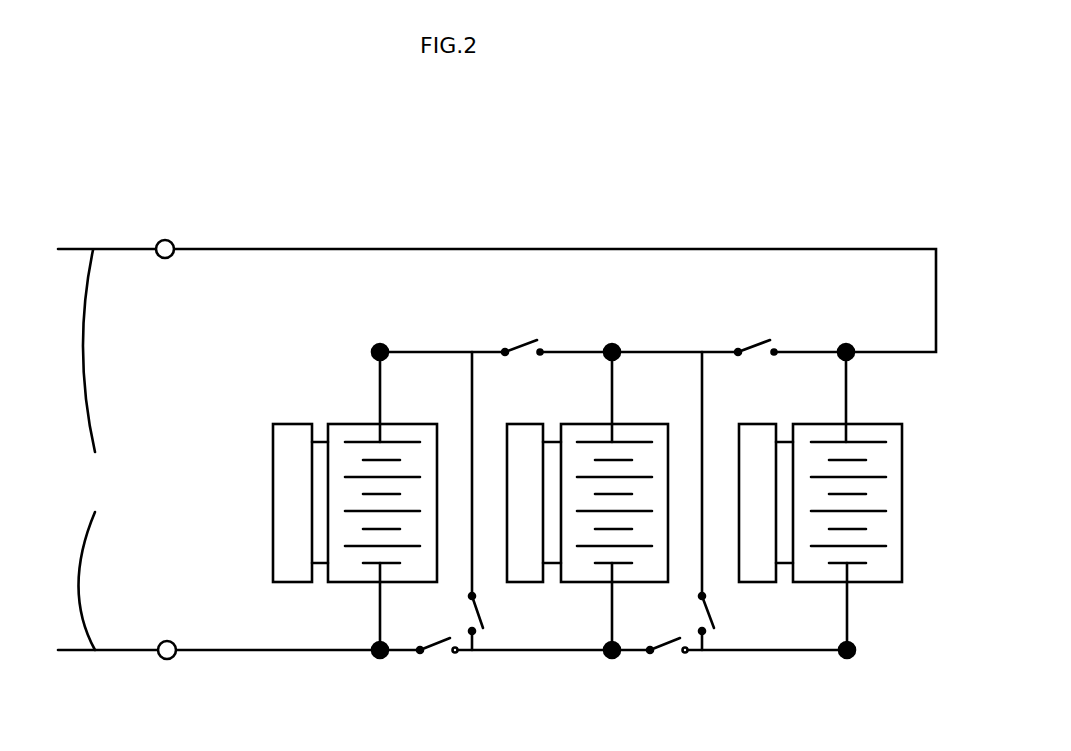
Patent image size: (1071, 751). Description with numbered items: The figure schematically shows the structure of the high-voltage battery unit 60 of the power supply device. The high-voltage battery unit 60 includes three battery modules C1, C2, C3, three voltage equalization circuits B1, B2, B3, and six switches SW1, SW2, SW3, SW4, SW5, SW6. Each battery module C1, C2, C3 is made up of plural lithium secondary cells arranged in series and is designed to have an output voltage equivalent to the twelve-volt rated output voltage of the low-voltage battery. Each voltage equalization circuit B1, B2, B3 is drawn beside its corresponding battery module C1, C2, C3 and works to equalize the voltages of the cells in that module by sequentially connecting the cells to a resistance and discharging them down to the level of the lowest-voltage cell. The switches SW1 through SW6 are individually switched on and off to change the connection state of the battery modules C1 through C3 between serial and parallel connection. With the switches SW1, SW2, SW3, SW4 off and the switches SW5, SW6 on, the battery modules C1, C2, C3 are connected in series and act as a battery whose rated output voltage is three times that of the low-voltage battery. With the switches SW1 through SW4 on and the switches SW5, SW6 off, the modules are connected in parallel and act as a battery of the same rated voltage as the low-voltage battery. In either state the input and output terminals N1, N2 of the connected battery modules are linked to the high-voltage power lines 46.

The high-voltage battery unit 60 is at (678, 176).
The high-voltage power lines 46 is at (98, 450).
The input and output terminal N1 is at (167, 660).
The input and output terminal N2 is at (164, 240).
The switch SW1 is at (522, 340).
The switch SW2 is at (753, 340).
The switch SW3 is at (435, 637).
The switch SW4 is at (650, 637).
The switch SW5 is at (485, 612).
The switch SW6 is at (715, 612).
The voltage equalization circuit B1 is at (298, 424).
The voltage equalization circuit B2 is at (525, 424).
The voltage equalization circuit B3 is at (758, 424).
The battery module C1 is at (398, 424).
The battery module C2 is at (630, 424).
The battery module C3 is at (861, 424).